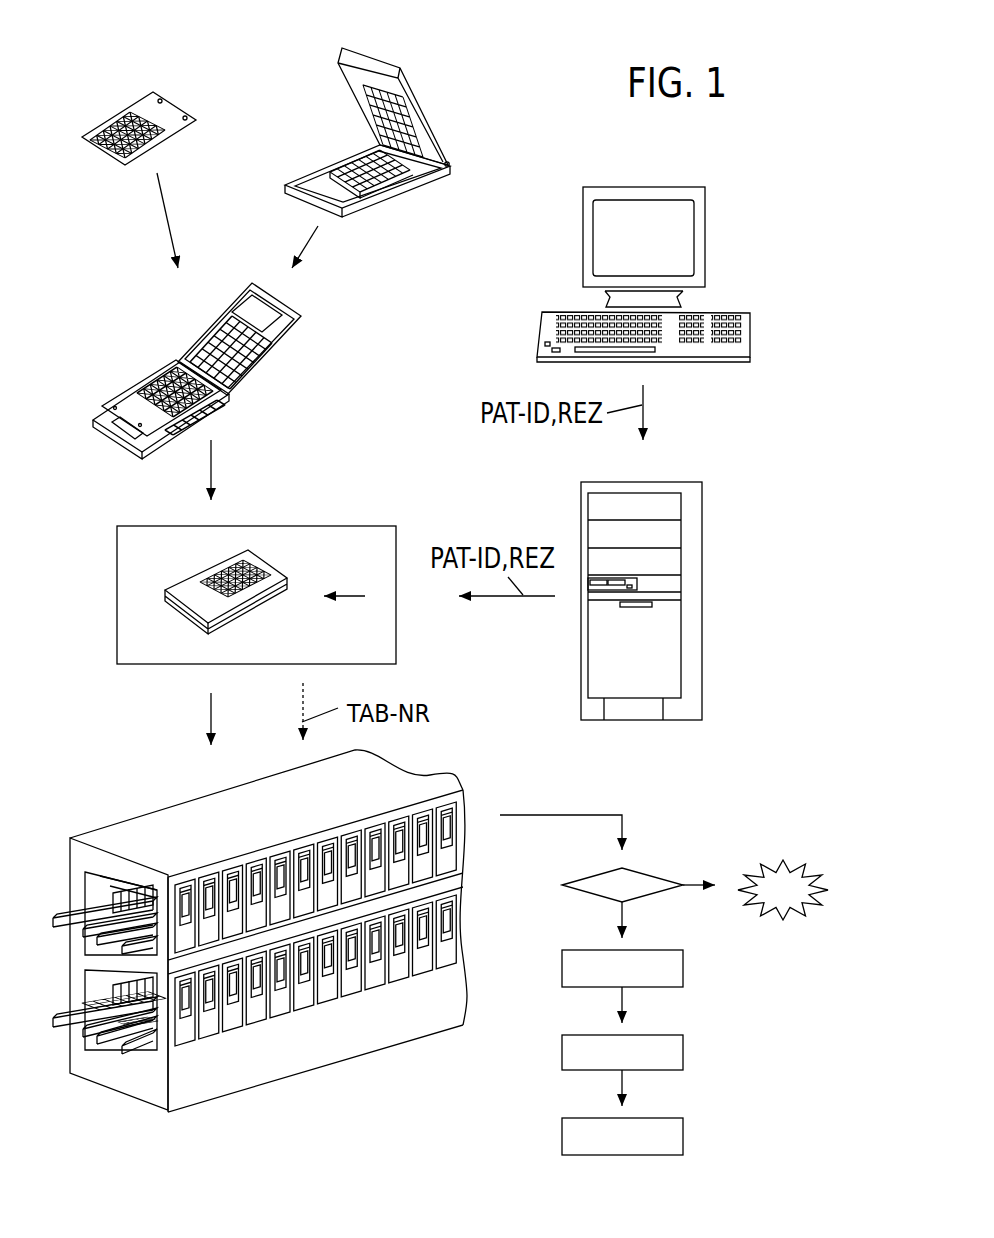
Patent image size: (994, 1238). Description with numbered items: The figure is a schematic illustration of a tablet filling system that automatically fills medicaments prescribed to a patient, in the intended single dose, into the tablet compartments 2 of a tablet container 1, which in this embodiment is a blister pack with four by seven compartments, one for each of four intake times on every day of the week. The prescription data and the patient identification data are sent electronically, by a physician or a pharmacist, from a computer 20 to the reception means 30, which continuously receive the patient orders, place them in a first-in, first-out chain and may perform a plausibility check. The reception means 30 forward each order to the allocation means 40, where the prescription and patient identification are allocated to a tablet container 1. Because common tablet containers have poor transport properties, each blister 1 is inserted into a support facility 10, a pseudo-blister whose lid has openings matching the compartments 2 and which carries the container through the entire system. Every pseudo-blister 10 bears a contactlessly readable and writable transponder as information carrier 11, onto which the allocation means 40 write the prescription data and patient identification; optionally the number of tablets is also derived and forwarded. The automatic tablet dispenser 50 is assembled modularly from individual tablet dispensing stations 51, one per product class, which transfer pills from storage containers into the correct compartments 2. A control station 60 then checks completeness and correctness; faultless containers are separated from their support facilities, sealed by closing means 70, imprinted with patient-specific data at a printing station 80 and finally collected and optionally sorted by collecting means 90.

The tablet container 1 is at (125, 165).
The tablet compartments 2 is at (130, 123).
The support facility 10 is at (427, 177).
The information carrier 11 is at (257, 322).
The computer 20 is at (740, 317).
The reception means 30 is at (700, 600).
The allocation means 40 is at (378, 640).
The automatic tablet dispenser 50 is at (357, 1020).
The tablet dispensing stations 51 is at (455, 930).
The control station 60 is at (637, 882).
The closing means 70 is at (663, 967).
The printing station 80 is at (667, 1050).
The collecting means 90 is at (663, 1130).